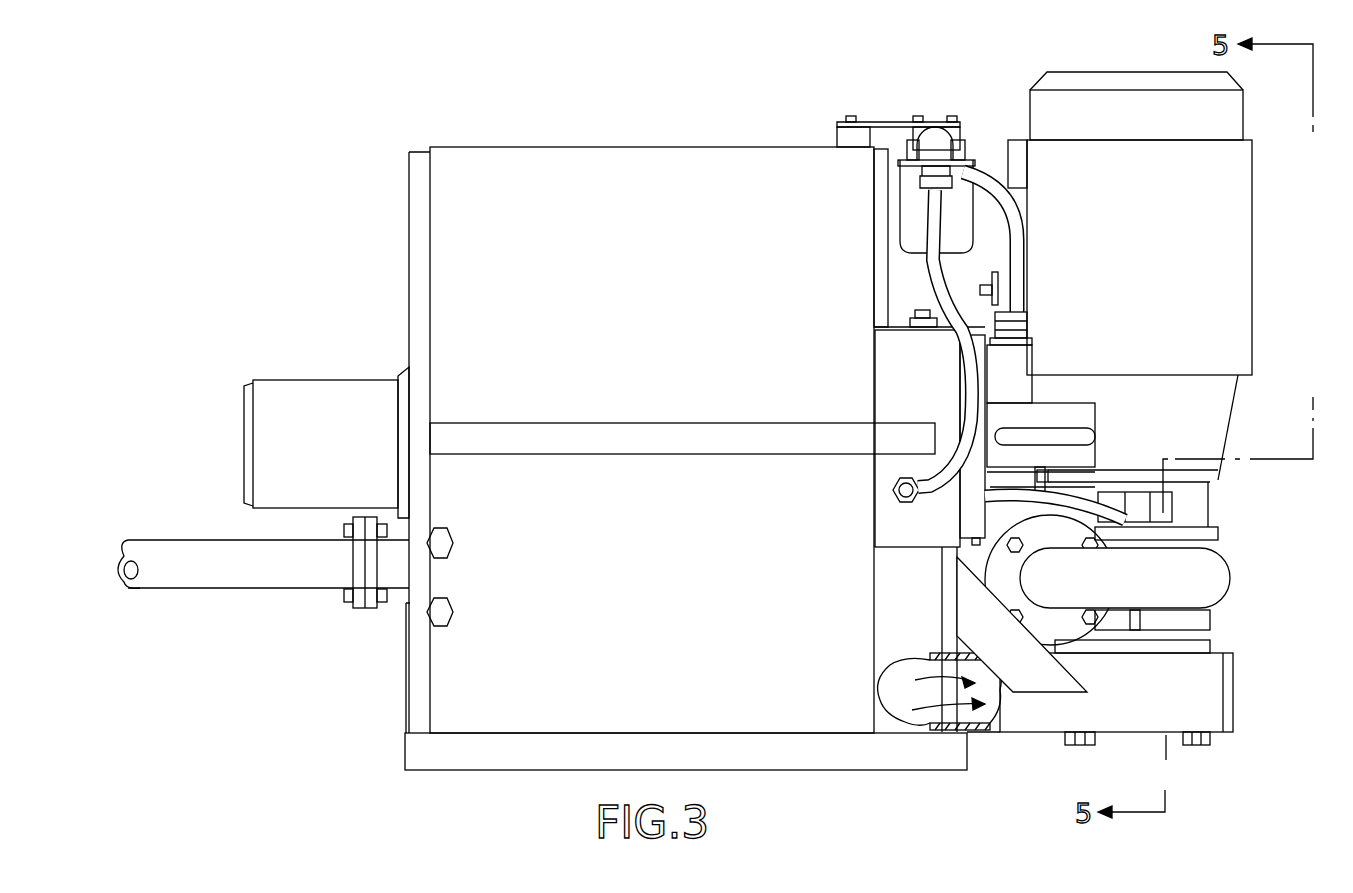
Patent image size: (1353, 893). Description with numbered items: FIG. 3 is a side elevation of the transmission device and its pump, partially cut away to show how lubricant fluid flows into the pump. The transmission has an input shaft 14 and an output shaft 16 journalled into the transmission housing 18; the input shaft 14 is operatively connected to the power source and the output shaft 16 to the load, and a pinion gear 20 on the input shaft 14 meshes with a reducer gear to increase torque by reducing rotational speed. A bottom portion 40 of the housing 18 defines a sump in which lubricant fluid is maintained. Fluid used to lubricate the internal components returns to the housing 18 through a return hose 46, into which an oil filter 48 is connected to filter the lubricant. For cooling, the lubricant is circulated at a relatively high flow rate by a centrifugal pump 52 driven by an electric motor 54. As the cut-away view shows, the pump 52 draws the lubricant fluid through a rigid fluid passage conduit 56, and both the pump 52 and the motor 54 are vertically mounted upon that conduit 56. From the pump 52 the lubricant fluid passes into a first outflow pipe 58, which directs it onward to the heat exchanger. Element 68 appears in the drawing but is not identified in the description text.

The input shaft 14 is at (1097, 412).
The output shaft 16 is at (245, 418).
The transmission housing 18 is at (468, 147).
The pinion gear 20 is at (982, 170).
The bottom portion 40 is at (457, 702).
The return hose 46 is at (905, 292).
The oil filter 48 is at (905, 203).
The centrifugal pump 52 is at (1232, 592).
The electric motor 54 is at (1253, 292).
The rigid fluid passage conduit 56 is at (1236, 700).
The first outflow pipe 58 is at (230, 575).
The deflector plate 68 is at (1036, 678).